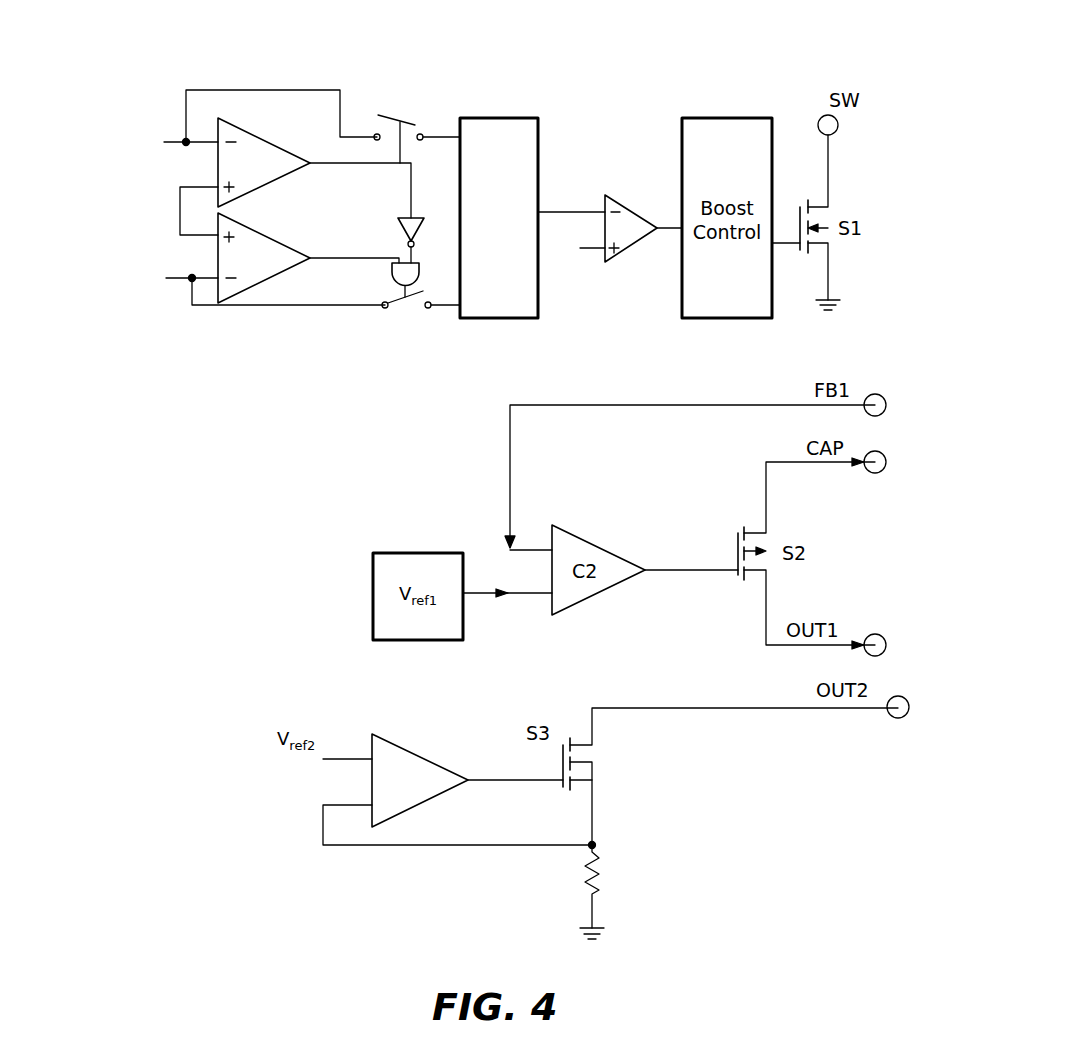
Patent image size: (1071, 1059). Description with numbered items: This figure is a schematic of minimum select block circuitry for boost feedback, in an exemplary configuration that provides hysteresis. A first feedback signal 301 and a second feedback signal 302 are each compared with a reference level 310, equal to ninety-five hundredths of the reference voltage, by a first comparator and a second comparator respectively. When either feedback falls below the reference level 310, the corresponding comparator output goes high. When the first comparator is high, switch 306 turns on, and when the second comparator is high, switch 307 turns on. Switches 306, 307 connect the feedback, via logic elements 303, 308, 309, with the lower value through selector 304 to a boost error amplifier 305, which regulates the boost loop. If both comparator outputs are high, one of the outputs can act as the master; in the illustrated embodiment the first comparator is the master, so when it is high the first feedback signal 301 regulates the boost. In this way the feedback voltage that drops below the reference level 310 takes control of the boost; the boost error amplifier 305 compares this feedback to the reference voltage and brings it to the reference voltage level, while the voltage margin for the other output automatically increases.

The feedback signal FB1 301 is at (236, 88).
The feedback signal OUT2 302 is at (254, 307).
The logic element 303 is at (398, 232).
The selector 304 is at (515, 118).
The boost error amplifier 305 is at (632, 247).
The switch 306 is at (402, 127).
The switch 307 is at (402, 308).
The logic element 308 is at (432, 248).
The logic element 309 is at (392, 272).
The 0.95×Vref reference 310 is at (113, 190).